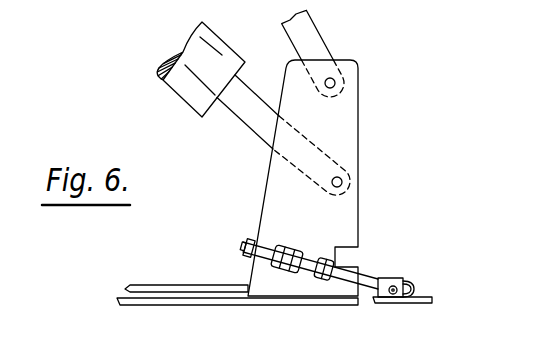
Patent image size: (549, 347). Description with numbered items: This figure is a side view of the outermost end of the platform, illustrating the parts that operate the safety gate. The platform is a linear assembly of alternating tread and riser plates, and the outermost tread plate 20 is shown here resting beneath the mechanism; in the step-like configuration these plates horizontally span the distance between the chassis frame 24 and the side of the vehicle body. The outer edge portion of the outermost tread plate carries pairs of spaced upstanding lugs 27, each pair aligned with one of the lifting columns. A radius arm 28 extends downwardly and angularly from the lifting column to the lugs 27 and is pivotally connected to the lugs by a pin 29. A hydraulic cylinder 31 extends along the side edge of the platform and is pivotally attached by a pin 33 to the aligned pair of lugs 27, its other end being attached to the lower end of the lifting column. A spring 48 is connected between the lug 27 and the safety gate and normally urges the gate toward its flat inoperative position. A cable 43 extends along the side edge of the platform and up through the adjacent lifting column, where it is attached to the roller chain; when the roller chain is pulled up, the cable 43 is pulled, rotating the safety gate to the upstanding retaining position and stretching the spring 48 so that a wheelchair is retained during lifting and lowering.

The tread plate 20 is at (228, 305).
The chassis frame 24 is at (408, 304).
The upstanding lug 27 is at (347, 134).
The radius arm 28 is at (311, 34).
The pin 29 is at (336, 83).
The hydraulic cylinder 31 is at (186, 96).
The pin 33 is at (342, 182).
The cable 43 is at (175, 287).
The spring 48 is at (292, 247).